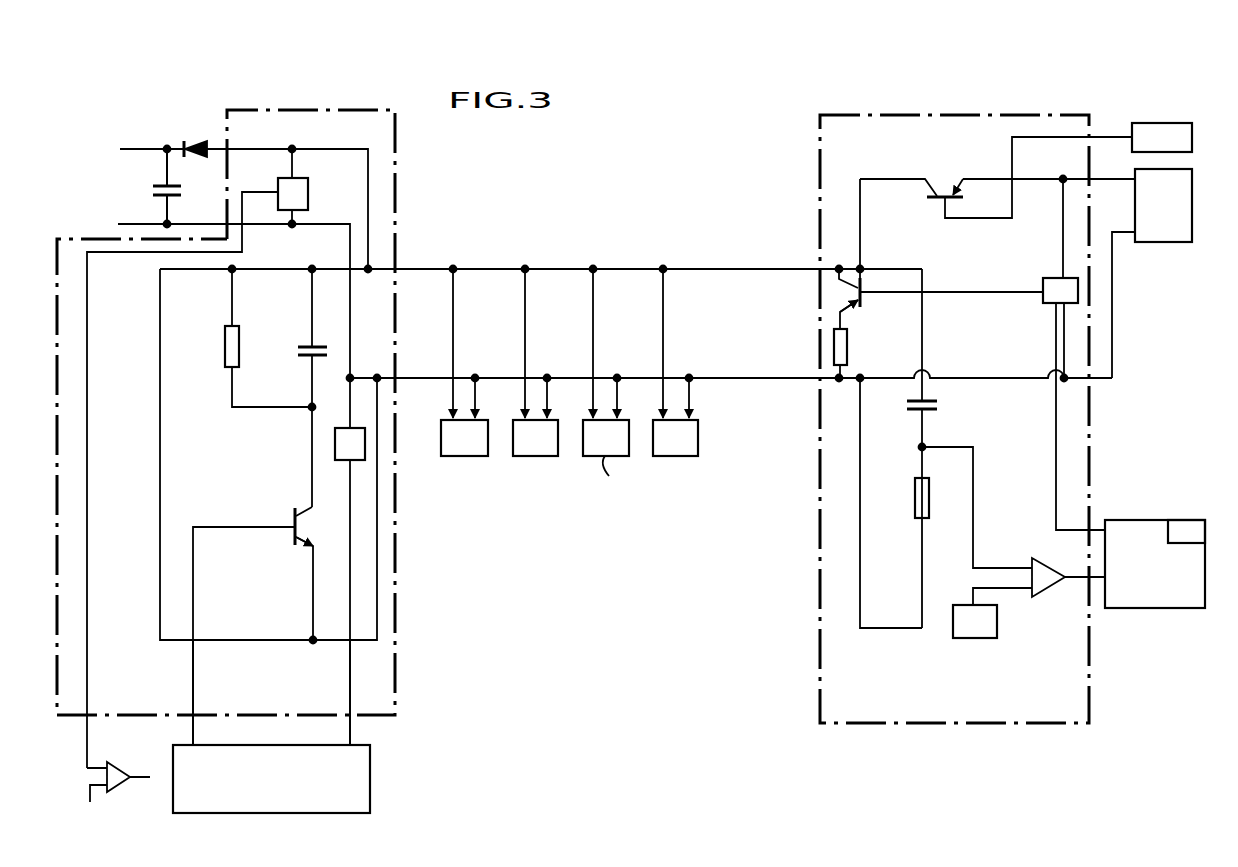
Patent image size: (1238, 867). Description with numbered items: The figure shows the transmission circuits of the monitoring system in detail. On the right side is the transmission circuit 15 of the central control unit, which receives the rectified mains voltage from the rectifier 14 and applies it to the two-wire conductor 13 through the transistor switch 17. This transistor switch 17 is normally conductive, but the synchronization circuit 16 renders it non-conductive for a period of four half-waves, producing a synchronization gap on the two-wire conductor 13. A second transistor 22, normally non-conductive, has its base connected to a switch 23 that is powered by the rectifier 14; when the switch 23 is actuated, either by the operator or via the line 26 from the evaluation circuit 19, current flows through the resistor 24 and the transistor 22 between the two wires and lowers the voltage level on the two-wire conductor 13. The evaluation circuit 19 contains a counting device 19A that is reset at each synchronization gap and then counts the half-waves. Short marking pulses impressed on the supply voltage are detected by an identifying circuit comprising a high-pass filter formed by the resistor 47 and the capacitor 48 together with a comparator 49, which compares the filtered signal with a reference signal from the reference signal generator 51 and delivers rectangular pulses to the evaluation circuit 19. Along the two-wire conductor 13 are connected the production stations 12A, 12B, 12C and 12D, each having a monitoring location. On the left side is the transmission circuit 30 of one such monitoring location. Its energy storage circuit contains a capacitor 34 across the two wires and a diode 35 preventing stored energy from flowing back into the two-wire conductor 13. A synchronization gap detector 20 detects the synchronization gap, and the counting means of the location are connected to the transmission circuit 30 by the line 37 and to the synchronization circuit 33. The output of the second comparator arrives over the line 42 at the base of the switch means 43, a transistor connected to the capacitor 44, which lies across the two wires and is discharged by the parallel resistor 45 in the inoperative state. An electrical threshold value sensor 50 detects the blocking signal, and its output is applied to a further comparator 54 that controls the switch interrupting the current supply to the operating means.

The production station 12A is at (675, 456).
The production station 12B is at (610, 385).
The production station 12C is at (538, 456).
The production station 12D is at (466, 456).
The two-wire conductor 13 is at (730, 268).
The rectifier 14 is at (1167, 240).
The transmission circuit 15 is at (820, 640).
The synchronization circuit 16 is at (1137, 128).
The transistor switch 17 is at (931, 202).
The evaluation circuit 19 is at (1157, 607).
The counting device 19A is at (1188, 527).
The synchronization gap detector 20 is at (344, 428).
The second transistor 22 is at (863, 303).
The switch 23 is at (1048, 284).
The resistor 24 is at (847, 348).
The line 26 is at (1056, 432).
The transmission circuit 30 is at (395, 597).
The synchronization circuit 33 is at (370, 770).
The capacitor 34 is at (150, 190).
The diode 35 is at (200, 140).
The line 37 is at (350, 677).
The line 42 is at (193, 678).
The switch means 43 is at (292, 514).
The capacitor 44 is at (300, 346).
The resistor 45 is at (225, 362).
The resistor 47 is at (915, 508).
The capacitor 48 is at (938, 409).
The comparator 49 is at (1037, 560).
The electrical threshold value sensor 50 is at (308, 190).
The reference signal generator 51 is at (998, 630).
The further comparator 54 is at (125, 765).